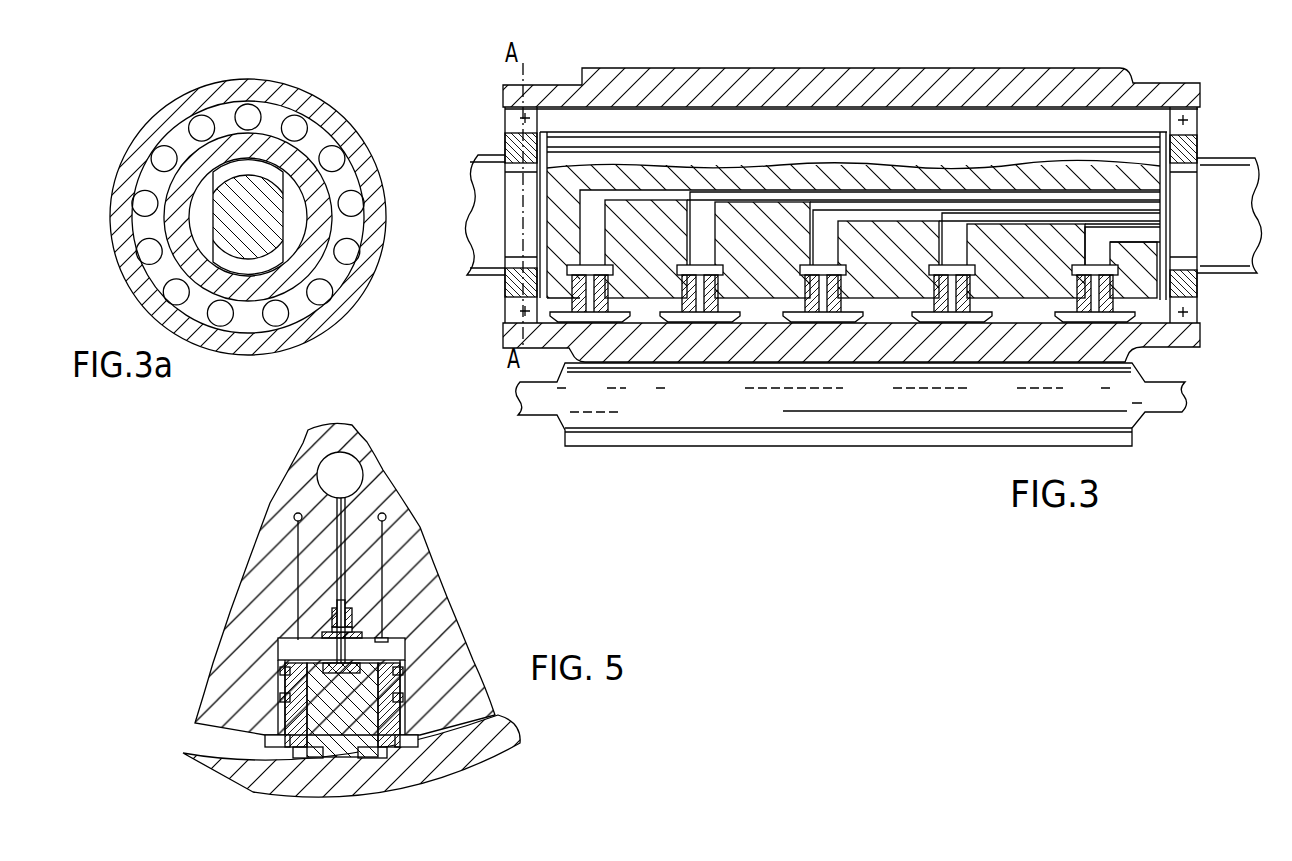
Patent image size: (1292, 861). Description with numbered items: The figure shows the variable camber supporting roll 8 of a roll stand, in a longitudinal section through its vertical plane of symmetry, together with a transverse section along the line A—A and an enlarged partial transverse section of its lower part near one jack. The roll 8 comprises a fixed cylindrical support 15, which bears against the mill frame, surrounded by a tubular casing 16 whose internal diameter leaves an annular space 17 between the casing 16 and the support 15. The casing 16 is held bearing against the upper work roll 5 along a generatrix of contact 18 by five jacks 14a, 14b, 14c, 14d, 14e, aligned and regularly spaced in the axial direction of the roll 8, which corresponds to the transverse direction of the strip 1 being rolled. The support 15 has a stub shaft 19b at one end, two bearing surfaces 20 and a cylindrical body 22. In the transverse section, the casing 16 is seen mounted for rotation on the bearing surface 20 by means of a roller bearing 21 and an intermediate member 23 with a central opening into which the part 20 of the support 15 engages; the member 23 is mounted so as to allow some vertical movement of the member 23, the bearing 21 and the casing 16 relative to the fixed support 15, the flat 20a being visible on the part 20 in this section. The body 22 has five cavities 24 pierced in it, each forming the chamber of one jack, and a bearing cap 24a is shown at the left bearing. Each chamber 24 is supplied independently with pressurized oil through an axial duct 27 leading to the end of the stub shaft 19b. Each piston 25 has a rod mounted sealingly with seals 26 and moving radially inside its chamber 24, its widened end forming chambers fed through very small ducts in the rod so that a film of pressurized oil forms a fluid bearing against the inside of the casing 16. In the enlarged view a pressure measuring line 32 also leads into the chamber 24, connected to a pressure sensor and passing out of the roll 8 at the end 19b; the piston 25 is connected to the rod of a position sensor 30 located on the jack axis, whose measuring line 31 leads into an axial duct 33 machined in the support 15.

In FIG. 3, the strip 1 is at (811, 440).
In FIG. 3, the work roll 5 is at (936, 413).
In FIG. 3, the supporting roll 8 is at (1083, 73).
In FIG. 3, the jack 14a is at (599, 336).
In FIG. 3, the jack 14b is at (700, 336).
In FIG. 3, the jack 14c is at (826, 321).
In FIG. 3, the jack 14d is at (965, 315).
In FIG. 3, the jack 14e is at (1104, 312).
In FIG. 3, the cylindrical support 15 is at (681, 134).
In FIG. 5, the cylindrical support 15 is at (417, 583).
In FIG. 3a, the tubular casing 16 is at (170, 113).
In FIG. 3, the tubular casing 16 is at (900, 104).
In FIG. 5, the tubular casing 16 is at (496, 741).
In FIG. 3, the annular space 17 is at (732, 122).
In FIG. 3, the generatrix of contact 18 is at (769, 365).
In FIG. 3, the stub shaft 19b is at (1224, 158).
In FIG. 3, the bearing surface 20 is at (548, 160).
In FIG. 3a, the shaft flat 20a is at (263, 213).
In FIG. 3a, the roller bearing 21 is at (223, 123).
In FIG. 3, the cylindrical body 22 is at (608, 148).
In FIG. 3a, the intermediate member 23 is at (246, 110).
In FIG. 3, the intermediate member 23 is at (532, 167).
In FIG. 5, the cavity 24 is at (280, 640).
In FIG. 3, the bearing cap 24a is at (507, 297).
In FIG. 3, the piston 25 is at (617, 321).
In FIG. 5, the piston 25 is at (362, 712).
In FIG. 3, the seal 26 is at (690, 320).
In FIG. 5, the seal 26 is at (282, 697).
In FIG. 3, the axial duct 27 is at (807, 191).
In FIG. 5, the axial duct 27 is at (294, 515).
In FIG. 5, the position sensor 30 is at (358, 623).
In FIG. 5, the measuring line 31 is at (333, 547).
In FIG. 3, the pressure measuring line 32 is at (1142, 175).
In FIG. 5, the pressure measuring line 32 is at (384, 604).
In FIG. 5, the axial duct 33 is at (337, 467).